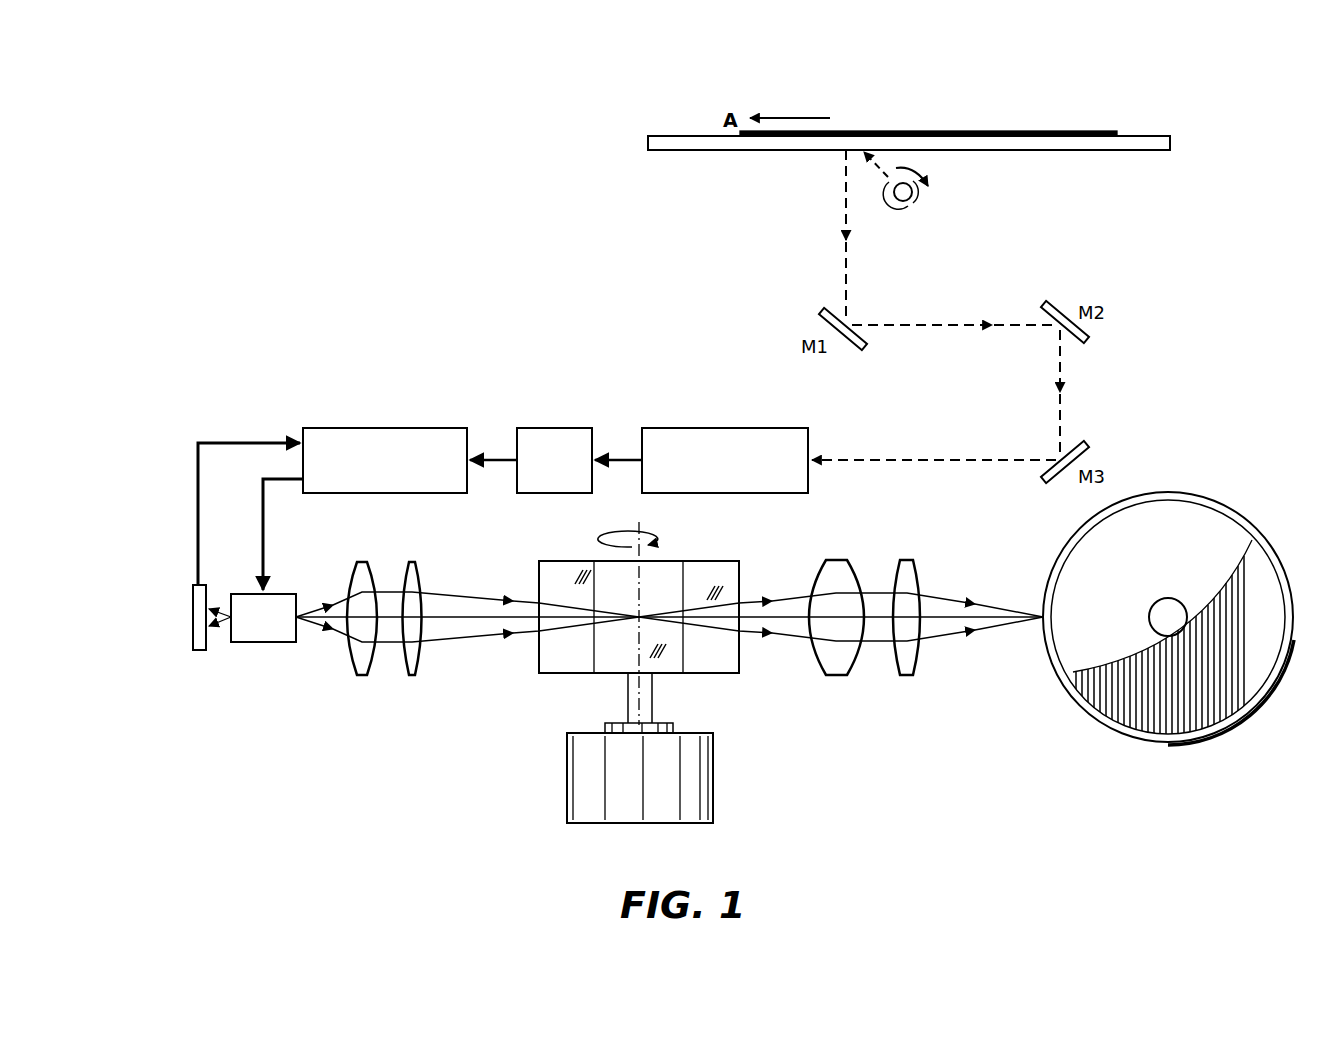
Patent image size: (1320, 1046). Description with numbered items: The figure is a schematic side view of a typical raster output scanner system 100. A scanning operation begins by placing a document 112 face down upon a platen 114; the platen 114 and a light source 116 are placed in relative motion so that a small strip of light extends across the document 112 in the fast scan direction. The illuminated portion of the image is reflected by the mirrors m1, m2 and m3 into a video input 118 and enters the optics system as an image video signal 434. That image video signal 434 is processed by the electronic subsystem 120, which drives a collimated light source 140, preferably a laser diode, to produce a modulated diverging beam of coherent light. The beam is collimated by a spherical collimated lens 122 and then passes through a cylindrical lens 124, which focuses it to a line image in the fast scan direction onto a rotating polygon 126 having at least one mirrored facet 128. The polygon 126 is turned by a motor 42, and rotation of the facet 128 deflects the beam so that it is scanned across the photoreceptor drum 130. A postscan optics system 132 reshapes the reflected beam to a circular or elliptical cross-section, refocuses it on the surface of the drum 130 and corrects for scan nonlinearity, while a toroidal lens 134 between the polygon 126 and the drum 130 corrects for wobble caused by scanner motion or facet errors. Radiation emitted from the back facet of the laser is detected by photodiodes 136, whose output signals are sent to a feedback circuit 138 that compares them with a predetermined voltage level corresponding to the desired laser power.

The laser writing system 100 is at (1214, 181).
The document 112 is at (1085, 131).
The platen 114 is at (1040, 150).
The light source 116 is at (910, 204).
The video input 118 is at (728, 428).
The electronic subsystem (ESS) 120 is at (530, 428).
The spherical collimated lens 122 is at (361, 562).
The cylindrical lens 124 is at (414, 562).
The rotating polygon 126 is at (577, 673).
The mirrored facet 128 is at (672, 561).
The photoreceptor drum 130 is at (1200, 493).
The postscan optics system 132 is at (834, 560).
The toroidal lens 134 is at (906, 560).
The photodiodes 136 is at (199, 650).
The feedback circuit 138 is at (378, 428).
The collimated light source 140 is at (252, 642).
The motor 42 is at (585, 823).
The image video signal 434 is at (490, 460).